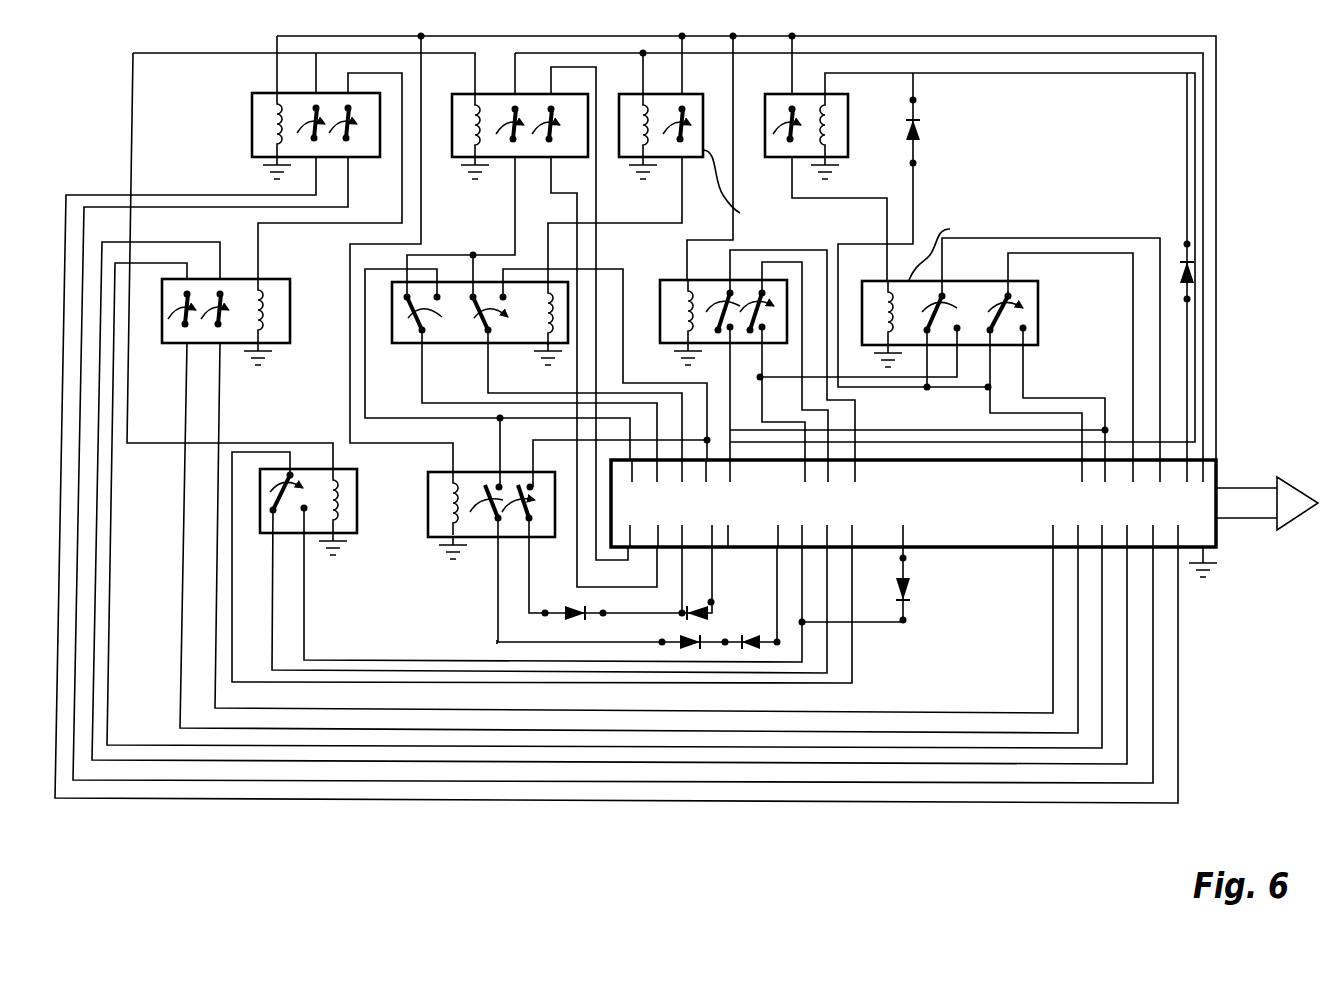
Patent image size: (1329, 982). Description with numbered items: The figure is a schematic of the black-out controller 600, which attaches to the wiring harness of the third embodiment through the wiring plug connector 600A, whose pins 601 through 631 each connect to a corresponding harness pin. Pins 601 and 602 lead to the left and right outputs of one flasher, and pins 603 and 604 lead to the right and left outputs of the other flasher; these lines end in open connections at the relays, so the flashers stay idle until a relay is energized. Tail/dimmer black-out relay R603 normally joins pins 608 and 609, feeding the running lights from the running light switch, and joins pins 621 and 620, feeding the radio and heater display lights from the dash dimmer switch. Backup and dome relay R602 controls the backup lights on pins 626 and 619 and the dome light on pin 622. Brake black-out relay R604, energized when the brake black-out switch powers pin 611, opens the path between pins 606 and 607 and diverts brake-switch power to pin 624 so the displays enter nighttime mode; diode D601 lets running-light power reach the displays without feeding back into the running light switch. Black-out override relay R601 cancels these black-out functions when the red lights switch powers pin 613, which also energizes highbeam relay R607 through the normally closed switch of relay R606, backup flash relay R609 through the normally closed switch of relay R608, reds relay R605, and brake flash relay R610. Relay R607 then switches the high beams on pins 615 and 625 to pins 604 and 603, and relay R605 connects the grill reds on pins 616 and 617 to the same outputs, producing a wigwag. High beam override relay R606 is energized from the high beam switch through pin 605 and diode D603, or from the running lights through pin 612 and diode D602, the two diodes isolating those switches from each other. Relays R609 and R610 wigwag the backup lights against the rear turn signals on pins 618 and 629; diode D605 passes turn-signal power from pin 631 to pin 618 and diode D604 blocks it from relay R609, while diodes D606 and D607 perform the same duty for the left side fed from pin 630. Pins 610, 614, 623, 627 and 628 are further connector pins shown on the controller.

The black-out controller 600 is at (1232, 305).
The wiring plug connector 600A is at (1218, 459).
The pin connection 601 is at (637, 483).
The pin connection 602 is at (704, 473).
The pin 603 is at (806, 483).
The pin 604 is at (1104, 483).
The pin 605 is at (1079, 473).
The pin 606 is at (826, 524).
The pin 607 is at (851, 534).
The pin 608 is at (1104, 534).
The pin 609 is at (1074, 524).
The controller terminal 610 is at (1154, 534).
The pin 611 is at (1184, 524).
The pin 612 is at (1184, 473).
The pin 613 is at (1199, 483).
The ground 614 is at (1214, 548).
The pin 615 is at (1134, 473).
The pin 616 is at (828, 473).
The pin 617 is at (857, 483).
The pin 618 is at (734, 534).
The pin 619 is at (686, 483).
The pin 620 is at (1129, 524).
The pin 621 is at (1054, 534).
The pin 622 is at (655, 524).
The controller terminal 623 is at (638, 534).
The pin 624 is at (806, 534).
The pin 625 is at (1157, 483).
The pin 626 is at (653, 473).
The controller terminal 627 is at (732, 483).
The controller terminal 628 is at (907, 524).
The pin 629 is at (688, 534).
The pin 630 is at (706, 524).
The pin 631 is at (781, 524).
The black-out override relay R601 is at (271, 129).
The backup and dome relay R602 is at (506, 147).
The tail/dimmer black-out relay R603 is at (249, 323).
The brake black-out relay R604 is at (336, 504).
The reds relay R605 is at (713, 312).
The high beam override relay R606 is at (840, 136).
The highbeam relay R607 is at (976, 324).
The relay R608 is at (676, 127).
The backup flash relay R609 is at (471, 334).
The brake flash relay R610 is at (471, 520).
The diode D601 is at (934, 585).
The diode D602 is at (1162, 263).
The diode D603 is at (937, 132).
The diode D604 is at (664, 648).
The diode D605 is at (751, 630).
The diode D606 is at (628, 607).
The diode D607 is at (523, 631).